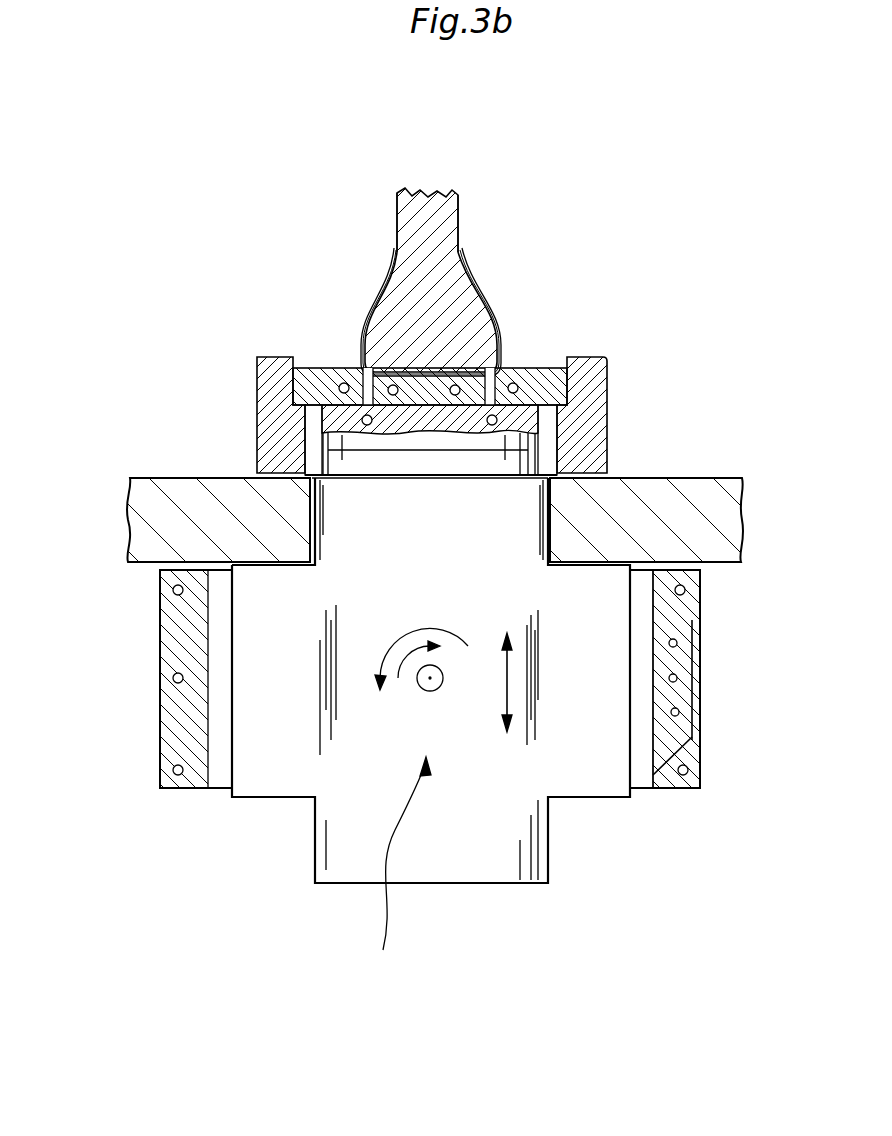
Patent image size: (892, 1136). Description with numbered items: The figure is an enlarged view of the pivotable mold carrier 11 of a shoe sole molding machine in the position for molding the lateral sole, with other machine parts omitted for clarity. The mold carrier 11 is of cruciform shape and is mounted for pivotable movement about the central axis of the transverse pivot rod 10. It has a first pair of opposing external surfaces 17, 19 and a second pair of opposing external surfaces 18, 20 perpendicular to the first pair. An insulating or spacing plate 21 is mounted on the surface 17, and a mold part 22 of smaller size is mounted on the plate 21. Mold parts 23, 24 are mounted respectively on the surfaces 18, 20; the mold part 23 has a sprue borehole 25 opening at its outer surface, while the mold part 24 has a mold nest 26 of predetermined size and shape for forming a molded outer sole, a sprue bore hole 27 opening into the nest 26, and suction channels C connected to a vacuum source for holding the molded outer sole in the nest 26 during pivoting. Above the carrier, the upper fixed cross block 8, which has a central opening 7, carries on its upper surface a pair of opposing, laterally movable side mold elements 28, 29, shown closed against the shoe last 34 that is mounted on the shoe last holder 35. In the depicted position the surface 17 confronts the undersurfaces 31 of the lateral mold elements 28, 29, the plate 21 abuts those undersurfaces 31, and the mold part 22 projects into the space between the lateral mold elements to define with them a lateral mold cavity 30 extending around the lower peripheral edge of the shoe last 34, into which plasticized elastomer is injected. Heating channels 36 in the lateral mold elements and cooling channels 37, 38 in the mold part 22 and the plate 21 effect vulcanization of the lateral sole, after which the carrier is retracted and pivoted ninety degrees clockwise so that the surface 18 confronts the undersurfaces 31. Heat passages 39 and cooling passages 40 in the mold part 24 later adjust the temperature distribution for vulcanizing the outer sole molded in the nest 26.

The shoe last holder 35 is at (453, 225).
The shoe last 34 is at (472, 283).
The mold part 22 is at (501, 282).
The cooling channels 37 is at (372, 362).
The lateral mold cavity 30 is at (444, 316).
The heating channels 36 is at (365, 370).
The undersurfaces 31 is at (320, 365).
The side mold element 29 is at (302, 393).
The side mold element 28 is at (560, 408).
The cooling channels 38 is at (318, 425).
The insulating or spacing plate 21 is at (330, 440).
The external surface 17 is at (457, 475).
The central opening 7 is at (312, 526).
The upper fixed cross block 8 is at (713, 515).
The external surface 20 is at (632, 750).
The external surface 18 is at (147, 679).
The mold part 23 is at (187, 725).
The sprue borehole 25 is at (165, 678).
The mold nest 26 is at (675, 690).
The cooling passages 40 is at (688, 586).
The sprue bore hole 27 is at (680, 666).
The mold part 24 is at (678, 690).
The suction channels C is at (693, 789).
The heat passages 39 is at (660, 626).
The transverse pivot rod 10 is at (428, 690).
The mold carrier 11 is at (398, 872).
The external surface 19 is at (507, 884).